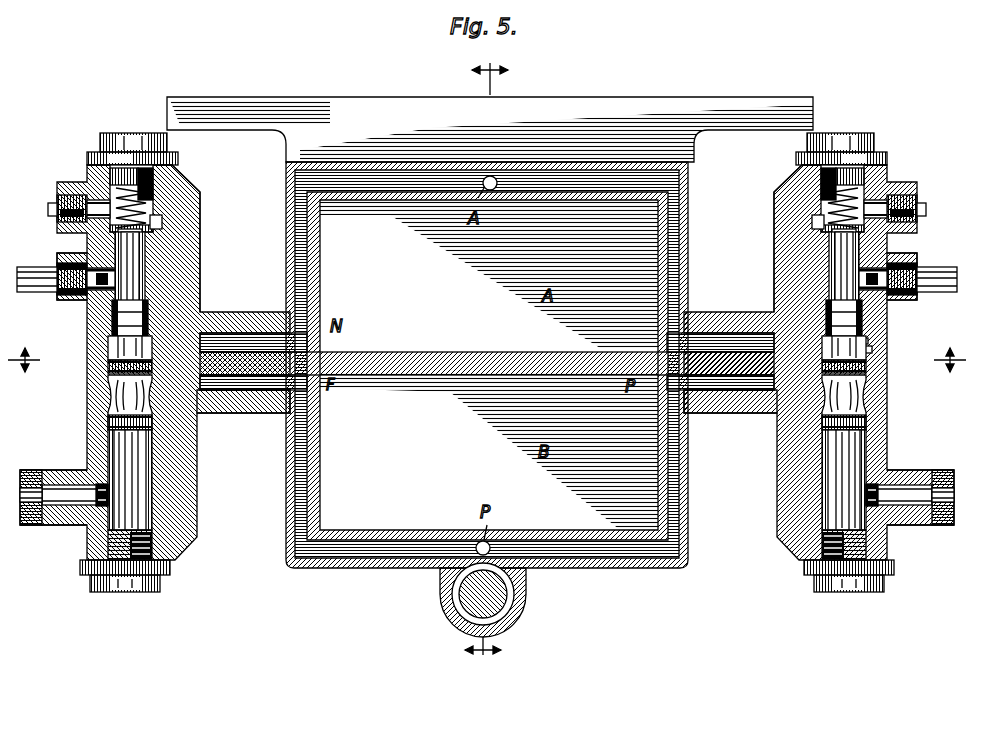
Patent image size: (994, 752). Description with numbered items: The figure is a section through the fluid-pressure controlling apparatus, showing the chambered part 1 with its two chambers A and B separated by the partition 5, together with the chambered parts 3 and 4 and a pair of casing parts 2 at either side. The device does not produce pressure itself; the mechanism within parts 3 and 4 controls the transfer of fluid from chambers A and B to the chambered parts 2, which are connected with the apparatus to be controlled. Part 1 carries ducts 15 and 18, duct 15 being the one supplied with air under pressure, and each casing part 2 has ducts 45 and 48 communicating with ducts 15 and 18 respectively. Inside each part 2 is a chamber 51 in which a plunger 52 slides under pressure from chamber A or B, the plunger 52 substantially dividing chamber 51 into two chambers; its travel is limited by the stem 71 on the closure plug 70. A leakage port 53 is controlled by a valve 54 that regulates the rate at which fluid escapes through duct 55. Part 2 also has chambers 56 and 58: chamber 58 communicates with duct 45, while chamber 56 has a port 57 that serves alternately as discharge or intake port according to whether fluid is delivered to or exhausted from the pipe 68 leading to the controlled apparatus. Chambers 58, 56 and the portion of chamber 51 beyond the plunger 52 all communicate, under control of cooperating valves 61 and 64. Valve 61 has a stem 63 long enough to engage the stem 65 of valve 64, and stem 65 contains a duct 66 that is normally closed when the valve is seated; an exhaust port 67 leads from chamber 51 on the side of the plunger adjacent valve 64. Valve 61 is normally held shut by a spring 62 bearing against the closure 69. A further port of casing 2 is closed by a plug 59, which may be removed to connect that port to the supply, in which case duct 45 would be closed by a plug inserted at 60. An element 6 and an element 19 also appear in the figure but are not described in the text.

The chambered part 1 is at (560, 170).
The chambered part 2 is at (202, 226).
The chambered part 3 is at (484, 359).
The chambered part 4 is at (486, 360).
The partition 5 is at (572, 354).
The top plate 6 is at (748, 103).
The duct 15 is at (690, 292).
The duct 18 is at (680, 522).
The pivot boss 19 is at (455, 612).
The duct 45 is at (87, 185).
The duct 48 is at (247, 385).
The chamber 51 is at (144, 468).
The plunger 52 is at (110, 404).
The leakage port 53 is at (98, 505).
The valve 54 is at (60, 482).
The duct 55 is at (36, 522).
The chamber 56 is at (72, 258).
The port 57 is at (92, 290).
The chamber 58 is at (162, 195).
The plug 59 is at (56, 208).
The plug location 60 is at (270, 345).
The valve 61 is at (163, 222).
The spring 62 is at (140, 158).
The stem 63 is at (141, 262).
The valve 64 is at (112, 356).
The valve stem 65 is at (118, 318).
The duct 66 is at (868, 341).
The exhaust port 67 is at (872, 350).
The pipe 68 is at (30, 272).
The closure 69 is at (118, 150).
The closure plug 70 is at (130, 591).
The stem 71 is at (131, 516).